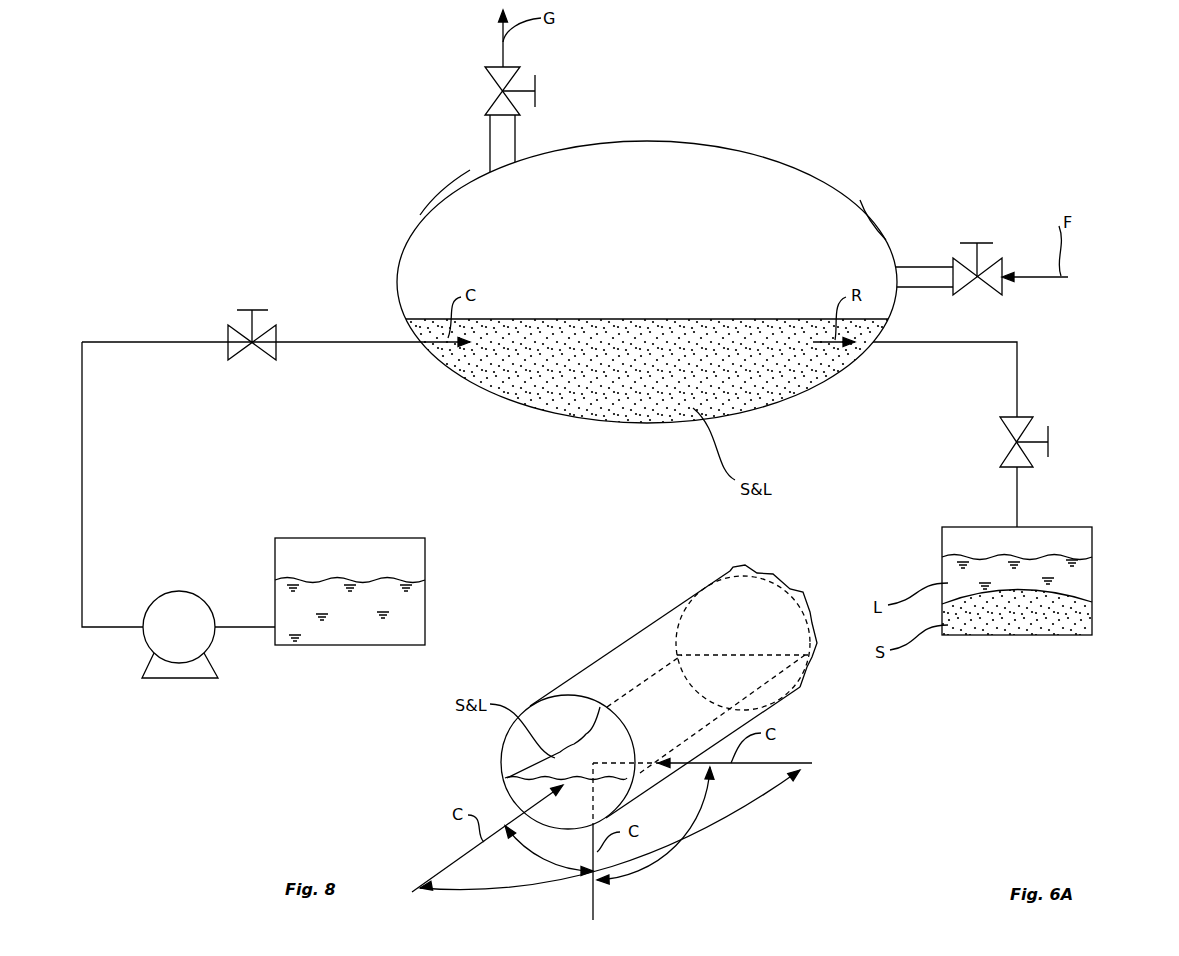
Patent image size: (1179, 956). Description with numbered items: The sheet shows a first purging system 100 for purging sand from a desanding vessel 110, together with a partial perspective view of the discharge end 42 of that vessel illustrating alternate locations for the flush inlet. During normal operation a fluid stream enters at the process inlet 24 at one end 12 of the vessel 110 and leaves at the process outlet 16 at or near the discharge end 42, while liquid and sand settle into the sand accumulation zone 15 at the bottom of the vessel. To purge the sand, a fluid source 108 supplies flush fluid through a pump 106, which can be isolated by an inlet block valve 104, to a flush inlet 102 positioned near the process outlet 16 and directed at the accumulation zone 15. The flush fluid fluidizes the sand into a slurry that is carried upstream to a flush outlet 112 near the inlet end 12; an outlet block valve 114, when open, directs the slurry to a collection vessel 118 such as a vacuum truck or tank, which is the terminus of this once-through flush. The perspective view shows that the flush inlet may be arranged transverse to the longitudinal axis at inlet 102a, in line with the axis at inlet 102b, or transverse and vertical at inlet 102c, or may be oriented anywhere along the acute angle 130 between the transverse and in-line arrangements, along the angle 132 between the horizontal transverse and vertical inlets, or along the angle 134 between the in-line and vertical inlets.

In FIG. 6A, the first purging system 100 is at (732, 103).
In FIG. 6A, the desanding vessel 110 is at (795, 168).
In FIG. 8, the desanding vessel 110 is at (622, 643).
In FIG. 6A, the discharge end 42 is at (425, 218).
In FIG. 8, the discharge end 42 is at (570, 697).
In FIG. 6A, the inlet end 12 is at (886, 240).
In FIG. 6A, the sand accumulation zone 15 is at (603, 397).
In FIG. 8, the sand accumulation zone 15 is at (513, 790).
In FIG. 6A, the process outlet 16 is at (490, 140).
In FIG. 6A, the process inlet 24 is at (932, 267).
In FIG. 6A, the flush inlet 102 is at (372, 343).
In FIG. 6A, the inlet block valve 104 is at (228, 327).
In FIG. 6A, the pump 106 is at (196, 637).
In FIG. 6A, the fluid source 108 is at (425, 567).
In FIG. 6A, the flush outlet 112 is at (893, 343).
In FIG. 6A, the outlet block valve 114 is at (1003, 423).
In FIG. 6A, the collection vessel 118 is at (942, 540).
In FIG. 8, the transverse arranged inlet 102a is at (787, 763).
In FIG. 8, the in-line inlet 102b is at (448, 866).
In FIG. 8, the transverse vertical inlet 102c is at (598, 903).
In FIG. 8, the acute angle 130 is at (728, 817).
In FIG. 8, the second angle 132 is at (673, 850).
In FIG. 8, the third angle 134 is at (533, 847).